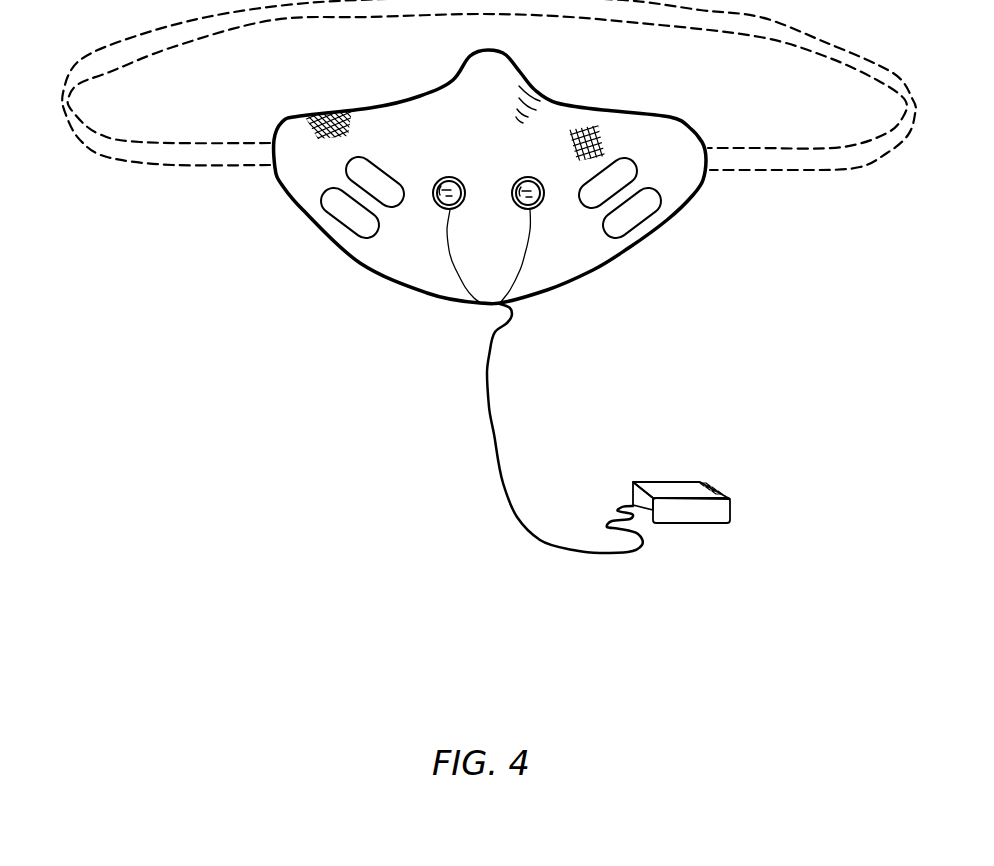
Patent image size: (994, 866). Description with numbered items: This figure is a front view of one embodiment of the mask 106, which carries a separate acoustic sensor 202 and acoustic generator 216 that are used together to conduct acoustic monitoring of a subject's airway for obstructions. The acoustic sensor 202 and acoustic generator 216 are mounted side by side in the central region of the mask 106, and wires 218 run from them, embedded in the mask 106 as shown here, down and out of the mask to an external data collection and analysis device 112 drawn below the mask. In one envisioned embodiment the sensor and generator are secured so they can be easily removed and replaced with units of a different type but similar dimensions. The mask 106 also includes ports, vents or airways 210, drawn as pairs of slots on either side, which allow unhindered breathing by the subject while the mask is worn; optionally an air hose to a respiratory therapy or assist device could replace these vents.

The mask 106 is at (597, 272).
The ports, vents or airways 210 is at (372, 178).
The acoustic sensor 202 is at (462, 206).
The acoustic generator 216 is at (535, 205).
The wires 218 is at (444, 234).
The external data collection and analysis device 112 is at (730, 511).